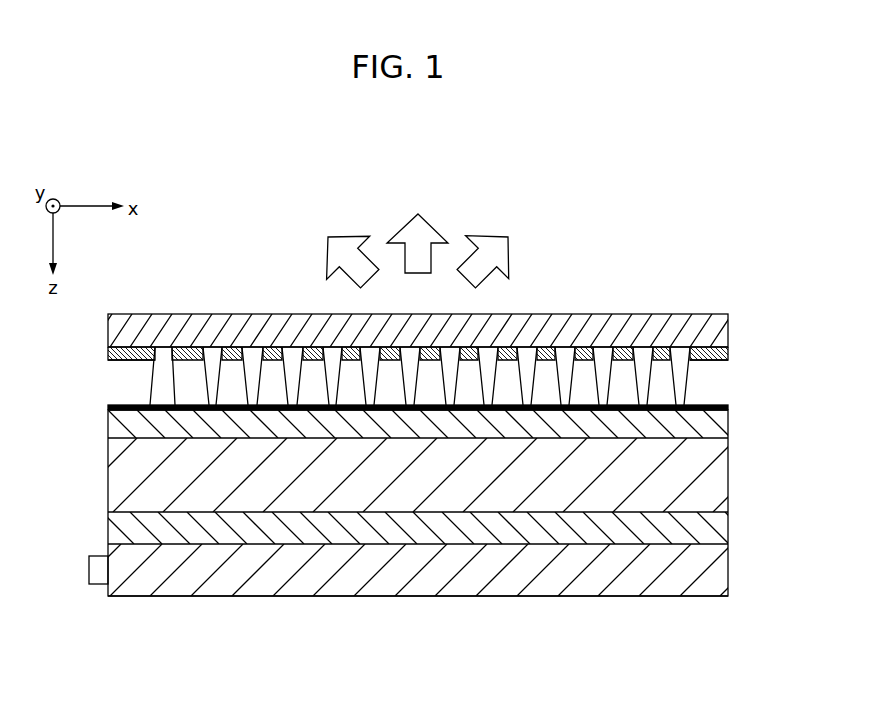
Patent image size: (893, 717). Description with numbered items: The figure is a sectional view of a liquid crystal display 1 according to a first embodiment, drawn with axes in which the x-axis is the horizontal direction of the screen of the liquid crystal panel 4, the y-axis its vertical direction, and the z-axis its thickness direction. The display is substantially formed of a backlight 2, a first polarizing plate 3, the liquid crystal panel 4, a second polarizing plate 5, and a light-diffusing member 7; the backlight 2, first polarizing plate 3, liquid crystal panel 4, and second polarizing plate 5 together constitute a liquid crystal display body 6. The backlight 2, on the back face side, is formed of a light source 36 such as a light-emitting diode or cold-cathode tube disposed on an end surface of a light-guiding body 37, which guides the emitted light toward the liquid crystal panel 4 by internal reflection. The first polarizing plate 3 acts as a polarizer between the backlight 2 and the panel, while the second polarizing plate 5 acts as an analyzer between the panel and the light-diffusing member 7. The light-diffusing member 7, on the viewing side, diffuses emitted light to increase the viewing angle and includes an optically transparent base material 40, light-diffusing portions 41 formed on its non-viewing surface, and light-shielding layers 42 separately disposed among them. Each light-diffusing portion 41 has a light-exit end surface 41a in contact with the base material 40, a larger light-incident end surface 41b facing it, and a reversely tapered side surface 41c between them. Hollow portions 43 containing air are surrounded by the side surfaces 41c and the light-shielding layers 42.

The liquid crystal display 1 is at (419, 200).
The backlight 2 is at (461, 619).
The first polarizing plate 3 is at (705, 527).
The liquid crystal panel 4 is at (705, 473).
The second polarizing plate 5 is at (705, 420).
The liquid crystal display body 6 is at (94, 487).
The light-diffusing member 7 is at (95, 347).
The light source 36 is at (90, 572).
The light-guiding body 37 is at (705, 570).
The base material 40 is at (605, 330).
The light-diffusing portions 41 is at (153, 381).
The light-exit end surface 41a is at (690, 355).
The light-incident end surface 41b is at (705, 410).
The side surface 41c is at (705, 361).
The light-shielding layers 42 is at (730, 338).
The hollow portions 43 is at (297, 356).